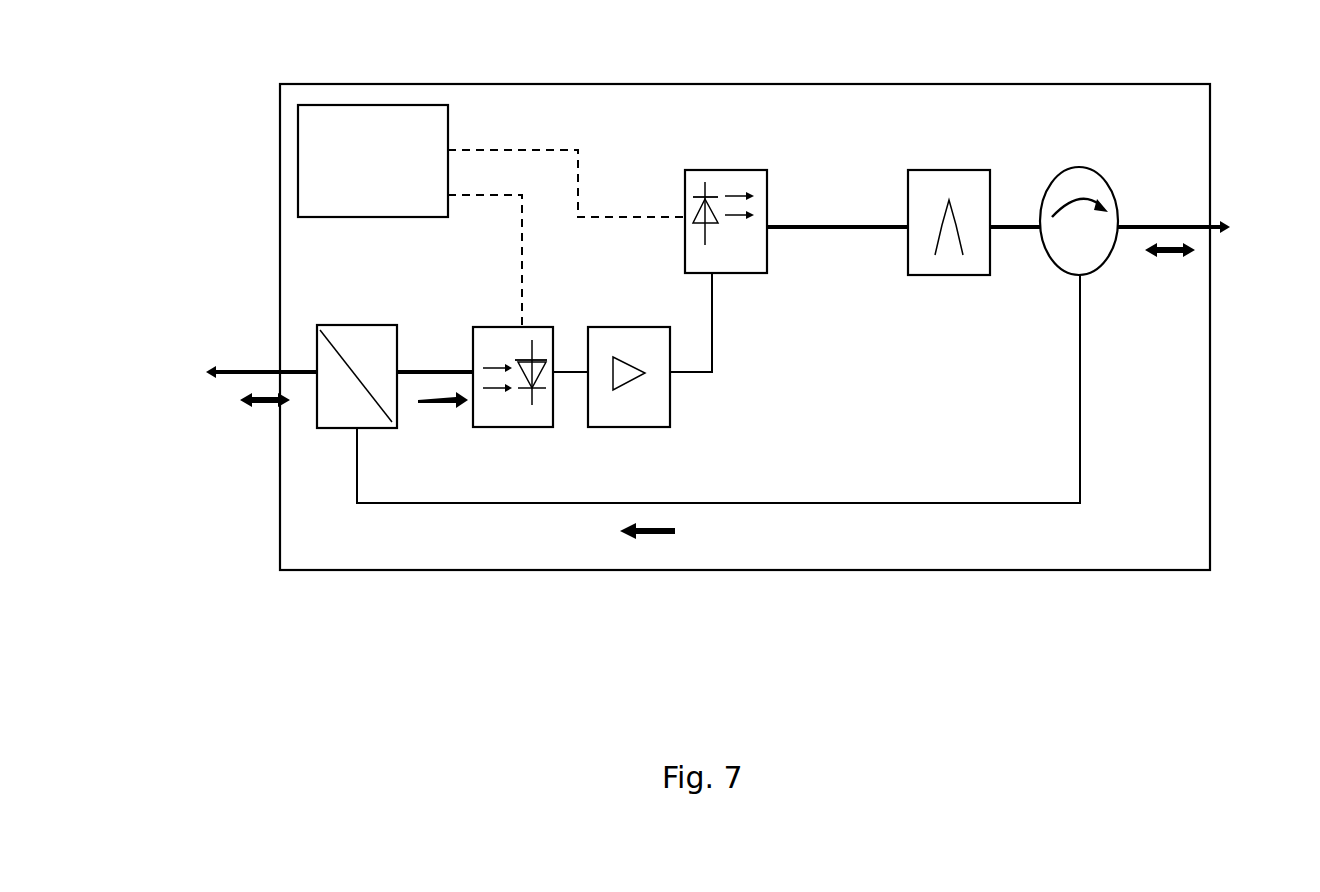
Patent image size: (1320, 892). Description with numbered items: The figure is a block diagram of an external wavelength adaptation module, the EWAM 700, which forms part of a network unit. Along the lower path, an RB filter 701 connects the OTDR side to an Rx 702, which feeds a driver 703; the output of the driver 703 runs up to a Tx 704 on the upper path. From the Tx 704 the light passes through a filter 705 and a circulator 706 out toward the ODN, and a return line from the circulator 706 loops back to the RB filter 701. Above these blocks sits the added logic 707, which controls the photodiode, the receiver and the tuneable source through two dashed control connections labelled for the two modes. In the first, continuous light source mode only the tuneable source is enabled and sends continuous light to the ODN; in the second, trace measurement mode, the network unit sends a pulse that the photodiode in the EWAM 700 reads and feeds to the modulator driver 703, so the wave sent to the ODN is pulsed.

The external wavelength adaptation module (EWAM) 700 is at (698, 327).
The RB filter 701 is at (354, 428).
The Rx 702 is at (502, 428).
The driver 703 is at (619, 428).
The Tx 704 is at (754, 273).
The filter 705 is at (922, 275).
The circulator 706 is at (1064, 275).
The logic 707 is at (373, 161).